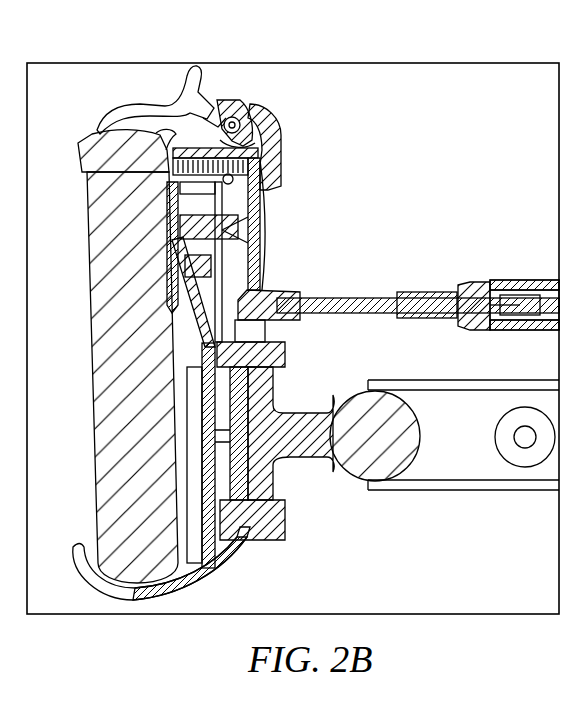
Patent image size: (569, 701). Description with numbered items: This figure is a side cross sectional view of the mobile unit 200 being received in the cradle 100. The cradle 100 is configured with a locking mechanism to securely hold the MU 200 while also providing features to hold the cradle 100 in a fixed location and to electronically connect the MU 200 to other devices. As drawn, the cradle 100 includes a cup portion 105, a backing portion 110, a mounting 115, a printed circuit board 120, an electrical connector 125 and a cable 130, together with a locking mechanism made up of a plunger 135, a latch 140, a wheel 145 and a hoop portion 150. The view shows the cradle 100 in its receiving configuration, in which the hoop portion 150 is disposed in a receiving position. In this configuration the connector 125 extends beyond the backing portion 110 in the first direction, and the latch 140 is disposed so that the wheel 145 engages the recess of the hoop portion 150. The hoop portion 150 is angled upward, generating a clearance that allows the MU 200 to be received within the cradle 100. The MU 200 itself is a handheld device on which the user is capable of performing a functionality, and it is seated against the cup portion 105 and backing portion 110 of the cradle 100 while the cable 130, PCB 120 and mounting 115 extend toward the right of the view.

The cradle 100 is at (96, 74).
The cup portion 105 is at (132, 592).
The backing portion 110 is at (228, 554).
The mounting 115 is at (262, 478).
The printed circuit board 120 is at (230, 236).
The electrical connector 125 is at (168, 222).
The cable 130 is at (352, 292).
The plunger 135 is at (85, 172).
The latch 140 is at (282, 134).
The wheel 145 is at (233, 110).
The hoop portion 150 is at (185, 80).
The mobile unit 200 is at (110, 452).